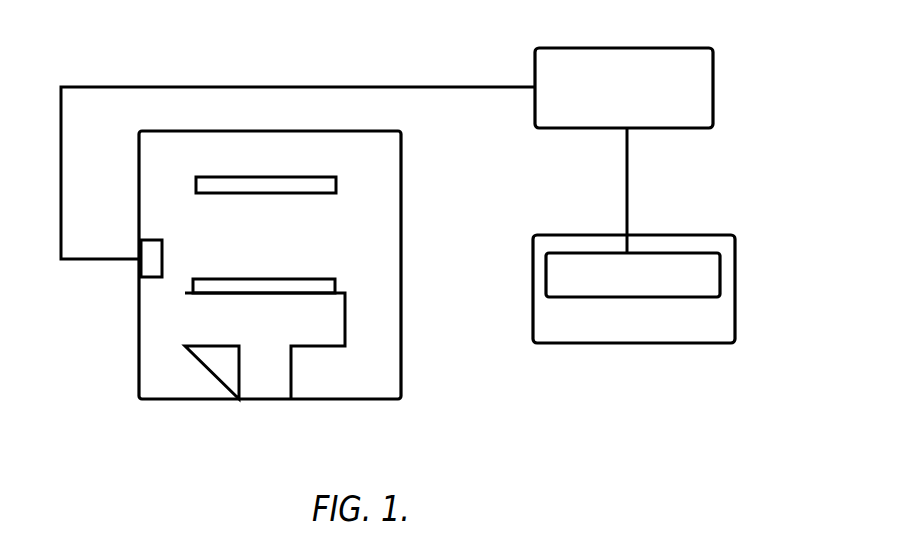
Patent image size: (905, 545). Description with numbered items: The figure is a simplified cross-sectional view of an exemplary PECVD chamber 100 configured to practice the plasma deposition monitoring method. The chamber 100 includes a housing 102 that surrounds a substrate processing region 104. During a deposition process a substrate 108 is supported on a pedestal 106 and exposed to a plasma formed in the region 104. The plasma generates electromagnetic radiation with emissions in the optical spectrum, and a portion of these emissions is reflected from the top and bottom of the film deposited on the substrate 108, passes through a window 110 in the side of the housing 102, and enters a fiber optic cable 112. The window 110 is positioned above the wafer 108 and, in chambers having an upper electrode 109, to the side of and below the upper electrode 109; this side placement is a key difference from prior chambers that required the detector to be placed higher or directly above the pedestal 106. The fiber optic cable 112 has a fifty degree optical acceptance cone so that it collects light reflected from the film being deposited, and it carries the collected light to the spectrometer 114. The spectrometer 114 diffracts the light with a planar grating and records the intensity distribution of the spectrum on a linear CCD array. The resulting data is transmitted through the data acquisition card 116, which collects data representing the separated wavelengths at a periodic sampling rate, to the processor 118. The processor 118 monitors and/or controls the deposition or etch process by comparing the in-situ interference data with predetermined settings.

The PECVD chamber 100 is at (103, 452).
The housing 102 is at (402, 211).
The substrate processing region 104 is at (287, 245).
The pedestal 106 is at (345, 320).
The substrate 108 is at (310, 279).
The upper electrode 109 is at (318, 177).
The window 110 is at (153, 239).
The fiber optic cable 112 is at (95, 261).
The spectrometer 114 is at (697, 47).
The data acquisition card 116 is at (692, 253).
The processor 118 is at (737, 272).